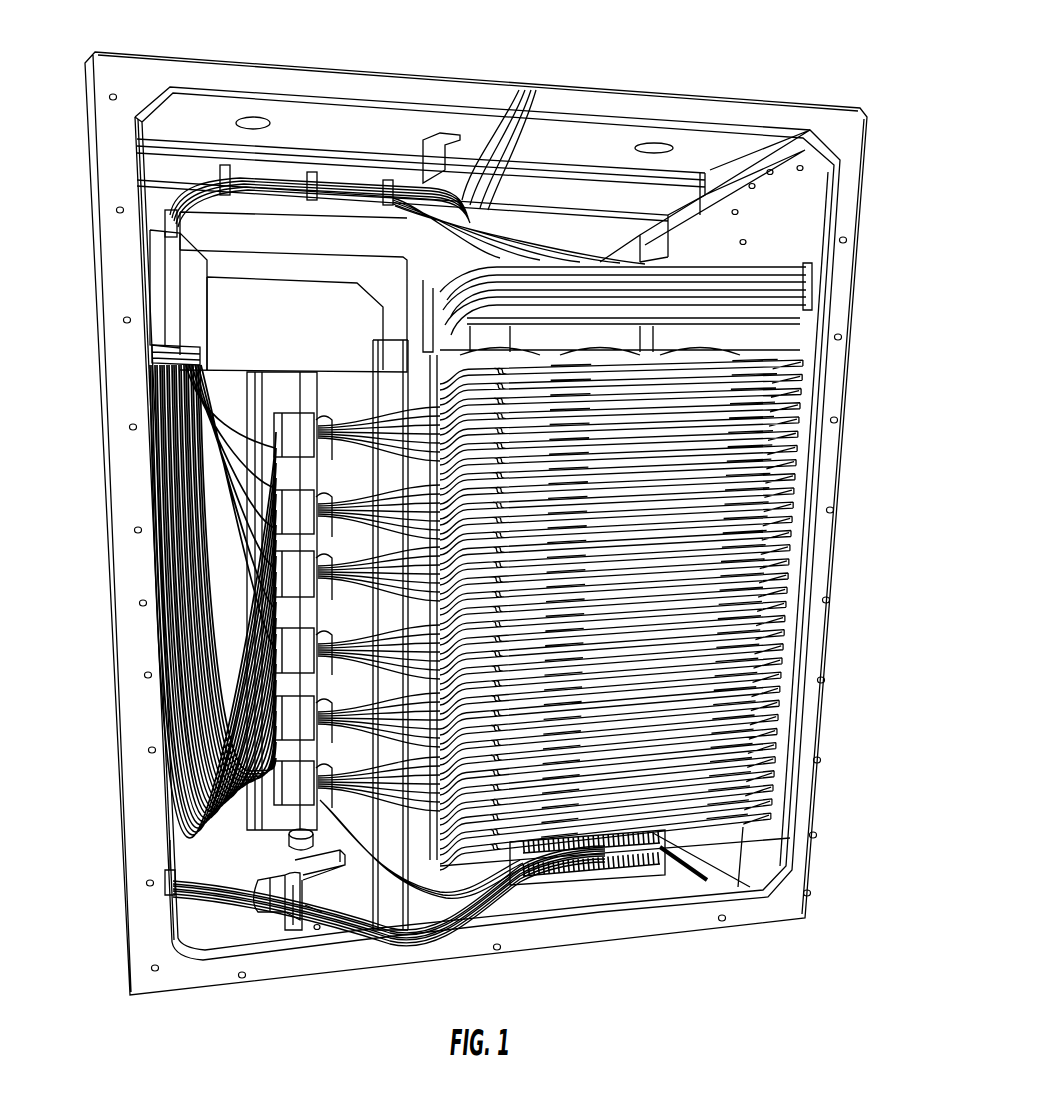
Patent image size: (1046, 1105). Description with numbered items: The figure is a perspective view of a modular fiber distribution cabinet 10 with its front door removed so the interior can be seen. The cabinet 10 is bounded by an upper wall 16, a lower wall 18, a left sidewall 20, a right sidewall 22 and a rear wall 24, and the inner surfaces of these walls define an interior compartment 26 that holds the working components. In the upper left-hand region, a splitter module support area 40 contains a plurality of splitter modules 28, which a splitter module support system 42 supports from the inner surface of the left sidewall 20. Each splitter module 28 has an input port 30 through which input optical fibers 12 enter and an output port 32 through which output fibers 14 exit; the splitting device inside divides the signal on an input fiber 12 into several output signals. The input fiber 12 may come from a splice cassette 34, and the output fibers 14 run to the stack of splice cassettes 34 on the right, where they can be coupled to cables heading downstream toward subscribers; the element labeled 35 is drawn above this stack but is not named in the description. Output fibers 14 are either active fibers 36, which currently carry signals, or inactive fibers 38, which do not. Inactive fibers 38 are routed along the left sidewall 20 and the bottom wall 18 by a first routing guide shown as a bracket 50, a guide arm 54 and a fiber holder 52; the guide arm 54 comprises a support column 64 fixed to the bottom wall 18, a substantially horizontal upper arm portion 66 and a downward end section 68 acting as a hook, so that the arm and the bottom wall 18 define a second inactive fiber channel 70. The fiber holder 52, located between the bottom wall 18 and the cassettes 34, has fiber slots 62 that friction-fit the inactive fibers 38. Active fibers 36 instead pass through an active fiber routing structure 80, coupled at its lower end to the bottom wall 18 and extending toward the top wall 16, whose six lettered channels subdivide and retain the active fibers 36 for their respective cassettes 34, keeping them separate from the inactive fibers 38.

The fiber distribution cabinet 10 is at (830, 74).
The input optical fibers 12 is at (488, 212).
The output fibers 14 is at (148, 395).
The upper wall 16 is at (603, 130).
The lower wall 18 is at (682, 880).
The left sidewall 20 is at (140, 748).
The right sidewall 22 is at (778, 792).
The rear wall 24 is at (322, 222).
The interior compartment 26 is at (258, 208).
The splitter modules 28 is at (165, 300).
The input port 30 is at (165, 210).
The output port 32 is at (165, 340).
The splice cassettes 34 is at (750, 690).
The tray holder 35 is at (690, 330).
The active fibers 36 is at (388, 376).
The inactive fibers 38 is at (198, 908).
The splitter module support area 40 is at (122, 252).
The splitter module support system 42 is at (200, 276).
The bracket 50 is at (172, 878).
The fiber holder 52 is at (642, 888).
The guide arm 54 is at (268, 922).
The fiber slots 62 is at (594, 880).
The support column 64 is at (300, 948).
The upper arm portion 66 is at (326, 882).
The end section 68 is at (348, 870).
The second inactive fiber channel 70 is at (312, 910).
The active fiber routing structure 80 is at (288, 392).